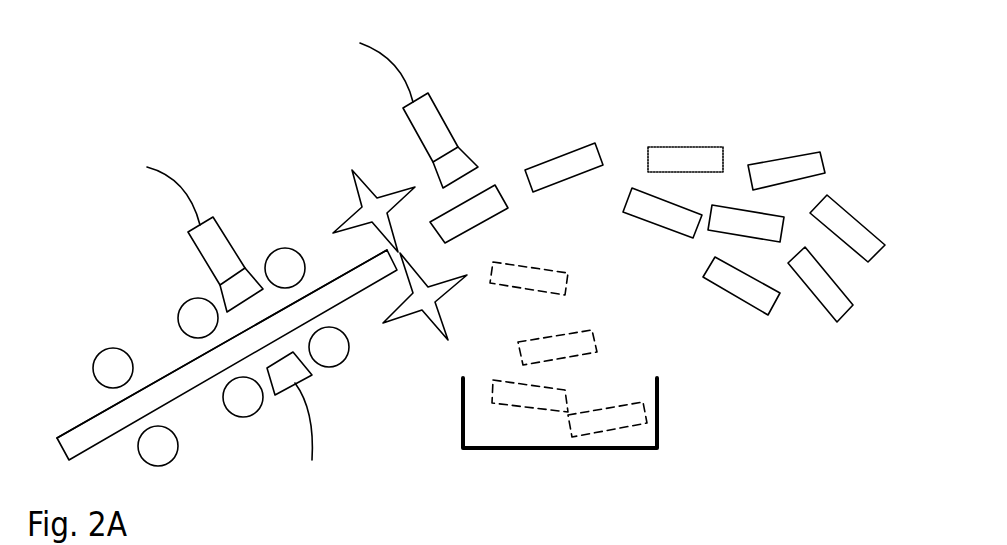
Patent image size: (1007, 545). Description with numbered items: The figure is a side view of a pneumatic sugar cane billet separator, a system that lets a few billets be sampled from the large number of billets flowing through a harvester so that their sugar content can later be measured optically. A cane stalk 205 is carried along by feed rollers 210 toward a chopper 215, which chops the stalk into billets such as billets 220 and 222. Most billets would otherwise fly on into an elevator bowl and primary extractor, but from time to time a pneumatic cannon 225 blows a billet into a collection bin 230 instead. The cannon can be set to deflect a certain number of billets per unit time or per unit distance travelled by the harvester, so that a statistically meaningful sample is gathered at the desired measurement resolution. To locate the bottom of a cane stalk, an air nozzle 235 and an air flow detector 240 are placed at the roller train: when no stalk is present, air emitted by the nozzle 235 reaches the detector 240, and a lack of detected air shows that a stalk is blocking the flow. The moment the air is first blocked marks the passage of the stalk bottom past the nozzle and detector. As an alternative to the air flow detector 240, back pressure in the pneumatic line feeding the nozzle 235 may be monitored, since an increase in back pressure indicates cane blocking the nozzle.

The cane stalk 205 is at (70, 423).
The feed rollers 210 is at (176, 310).
The chopper 215 is at (347, 185).
The billet 220 is at (578, 143).
The billet 222 is at (683, 145).
The pneumatic cannon 225 is at (447, 113).
The collection bin 230 is at (660, 412).
The air nozzle 235 is at (223, 220).
The air flow detector 240 is at (307, 378).